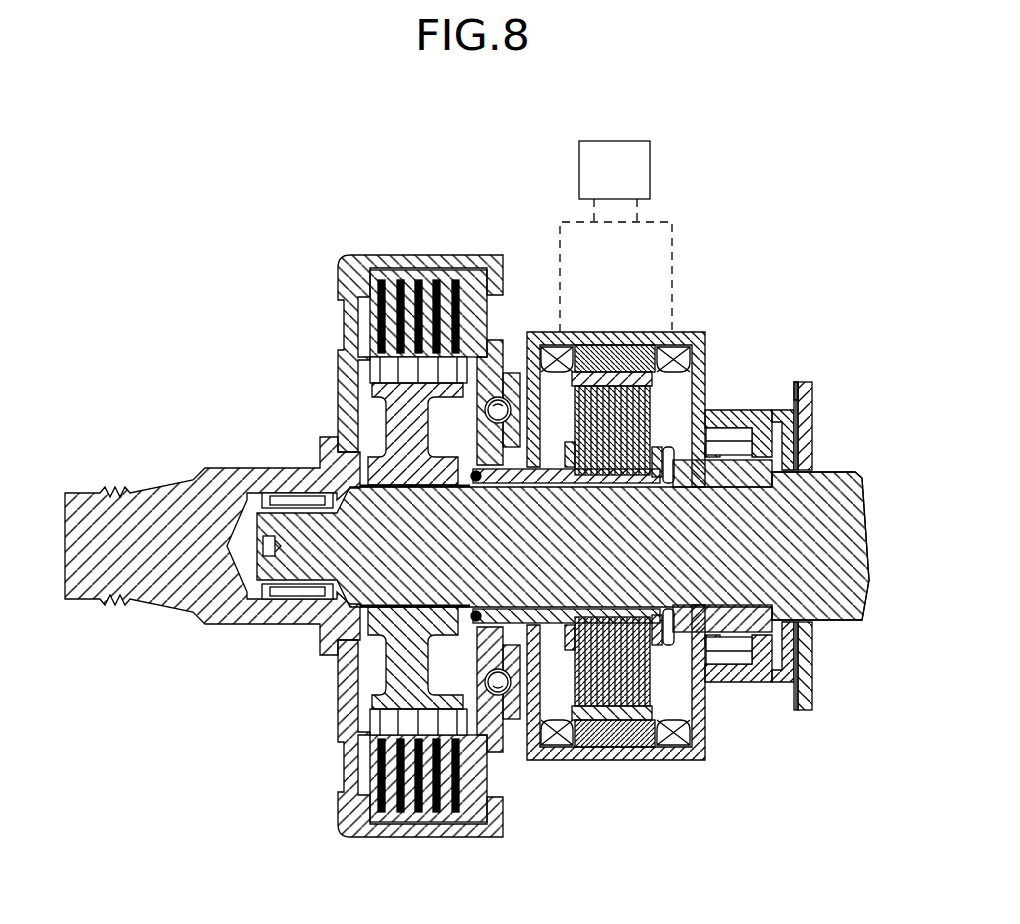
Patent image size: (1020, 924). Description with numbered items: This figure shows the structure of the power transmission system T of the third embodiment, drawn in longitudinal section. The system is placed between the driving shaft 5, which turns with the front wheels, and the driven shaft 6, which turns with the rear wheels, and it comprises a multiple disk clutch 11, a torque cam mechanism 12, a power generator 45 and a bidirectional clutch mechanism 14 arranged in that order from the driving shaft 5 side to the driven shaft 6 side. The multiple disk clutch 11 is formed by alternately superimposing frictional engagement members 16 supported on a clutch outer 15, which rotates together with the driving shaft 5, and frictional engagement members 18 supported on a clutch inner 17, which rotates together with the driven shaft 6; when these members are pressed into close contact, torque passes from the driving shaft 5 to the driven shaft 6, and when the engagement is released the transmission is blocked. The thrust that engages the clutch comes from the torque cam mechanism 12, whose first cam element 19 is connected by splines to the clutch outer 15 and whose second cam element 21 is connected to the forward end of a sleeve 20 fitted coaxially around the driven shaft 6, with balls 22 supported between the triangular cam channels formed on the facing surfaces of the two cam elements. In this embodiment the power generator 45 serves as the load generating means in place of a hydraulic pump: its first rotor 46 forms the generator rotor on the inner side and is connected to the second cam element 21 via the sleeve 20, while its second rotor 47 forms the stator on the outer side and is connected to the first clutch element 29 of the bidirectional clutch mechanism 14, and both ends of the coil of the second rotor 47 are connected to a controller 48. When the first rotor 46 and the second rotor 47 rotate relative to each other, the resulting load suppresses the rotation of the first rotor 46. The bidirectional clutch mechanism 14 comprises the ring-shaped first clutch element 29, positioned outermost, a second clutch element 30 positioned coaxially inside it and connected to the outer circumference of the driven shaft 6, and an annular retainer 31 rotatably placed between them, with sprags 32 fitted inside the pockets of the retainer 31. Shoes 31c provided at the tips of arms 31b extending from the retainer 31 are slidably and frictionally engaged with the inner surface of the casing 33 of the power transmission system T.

The driving shaft 5 is at (157, 562).
The driven shaft 6 is at (727, 582).
The multiple disk clutch 11 is at (411, 862).
The torque cam mechanism 12 is at (512, 740).
The bidirectional clutch mechanism 14 is at (772, 402).
The clutch outer 15 is at (352, 393).
The frictional engagement members 16 is at (412, 300).
The clutch inner 17 is at (406, 645).
The frictional engagement members 18 is at (406, 385).
The first cam element 19 is at (481, 464).
The sleeve 20 is at (556, 484).
The second cam element 21 is at (512, 470).
The balls 22 is at (503, 397).
The first clutch element 29 is at (742, 410).
The second clutch element 30 is at (714, 474).
The retainer 31 is at (782, 474).
The arms 31b is at (800, 447).
The shoes 31c is at (799, 432).
The sprags 32 is at (737, 452).
The casing 33 is at (806, 384).
The power generator 45 is at (665, 398).
The first rotor 46 is at (662, 478).
The second rotor 47 is at (605, 345).
The controller 48 is at (626, 187).
The power transmission system T is at (350, 229).